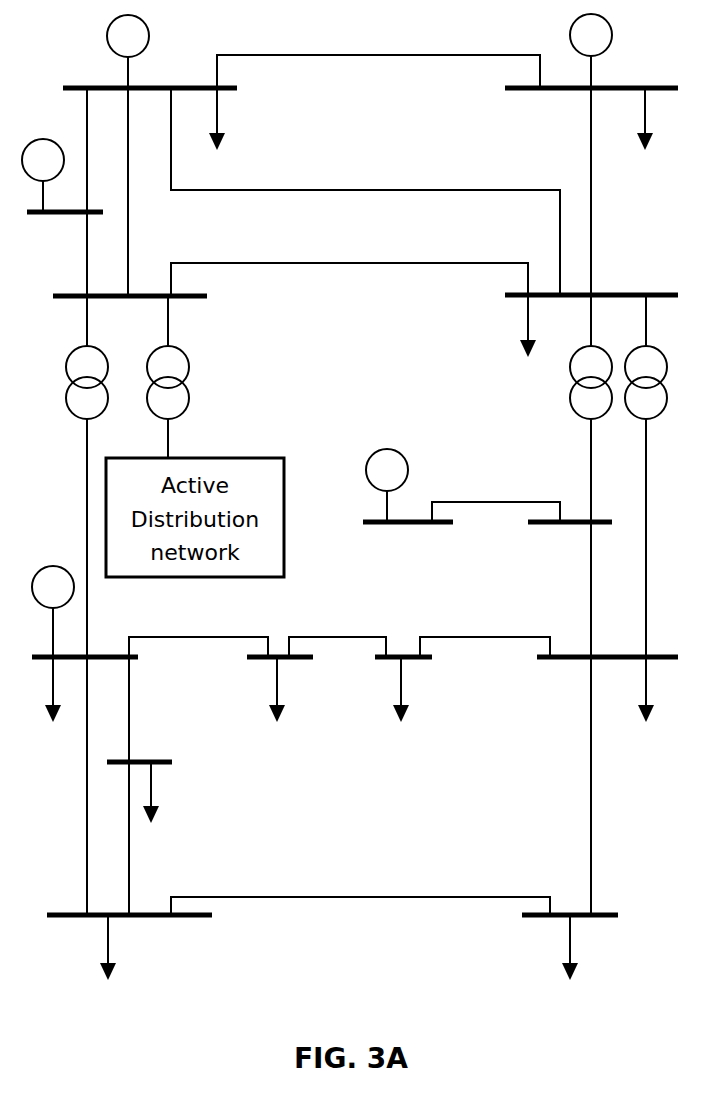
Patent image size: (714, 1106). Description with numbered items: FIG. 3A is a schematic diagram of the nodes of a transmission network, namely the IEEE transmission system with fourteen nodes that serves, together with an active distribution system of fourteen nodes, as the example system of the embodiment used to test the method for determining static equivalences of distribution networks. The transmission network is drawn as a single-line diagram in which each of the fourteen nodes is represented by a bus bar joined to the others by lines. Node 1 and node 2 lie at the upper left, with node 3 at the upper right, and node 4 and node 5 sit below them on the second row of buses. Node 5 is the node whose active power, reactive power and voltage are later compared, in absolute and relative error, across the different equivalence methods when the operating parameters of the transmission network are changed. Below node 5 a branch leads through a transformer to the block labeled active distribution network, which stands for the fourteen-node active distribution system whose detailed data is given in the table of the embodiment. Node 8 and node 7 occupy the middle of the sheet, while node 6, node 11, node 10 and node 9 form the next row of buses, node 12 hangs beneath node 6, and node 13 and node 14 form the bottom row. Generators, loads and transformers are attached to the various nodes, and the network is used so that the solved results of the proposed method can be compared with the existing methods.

The node 1 is at (62, 203).
The node 2 is at (169, 82).
The node 3 is at (582, 82).
The node 4 is at (582, 323).
The node 5 is at (149, 303).
The node 6 is at (106, 644).
The node 7 is at (562, 531).
The node 8 is at (399, 497).
The node 9 is at (607, 689).
The node 10 is at (424, 689).
The node 11 is at (273, 689).
The node 12 is at (165, 789).
The node 13 is at (152, 947).
The node 14 is at (554, 947).